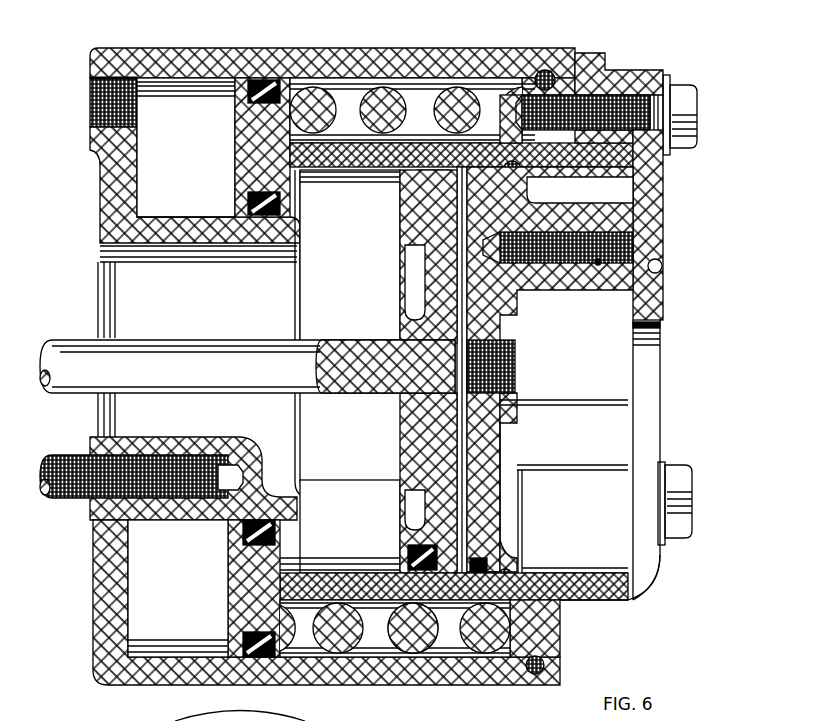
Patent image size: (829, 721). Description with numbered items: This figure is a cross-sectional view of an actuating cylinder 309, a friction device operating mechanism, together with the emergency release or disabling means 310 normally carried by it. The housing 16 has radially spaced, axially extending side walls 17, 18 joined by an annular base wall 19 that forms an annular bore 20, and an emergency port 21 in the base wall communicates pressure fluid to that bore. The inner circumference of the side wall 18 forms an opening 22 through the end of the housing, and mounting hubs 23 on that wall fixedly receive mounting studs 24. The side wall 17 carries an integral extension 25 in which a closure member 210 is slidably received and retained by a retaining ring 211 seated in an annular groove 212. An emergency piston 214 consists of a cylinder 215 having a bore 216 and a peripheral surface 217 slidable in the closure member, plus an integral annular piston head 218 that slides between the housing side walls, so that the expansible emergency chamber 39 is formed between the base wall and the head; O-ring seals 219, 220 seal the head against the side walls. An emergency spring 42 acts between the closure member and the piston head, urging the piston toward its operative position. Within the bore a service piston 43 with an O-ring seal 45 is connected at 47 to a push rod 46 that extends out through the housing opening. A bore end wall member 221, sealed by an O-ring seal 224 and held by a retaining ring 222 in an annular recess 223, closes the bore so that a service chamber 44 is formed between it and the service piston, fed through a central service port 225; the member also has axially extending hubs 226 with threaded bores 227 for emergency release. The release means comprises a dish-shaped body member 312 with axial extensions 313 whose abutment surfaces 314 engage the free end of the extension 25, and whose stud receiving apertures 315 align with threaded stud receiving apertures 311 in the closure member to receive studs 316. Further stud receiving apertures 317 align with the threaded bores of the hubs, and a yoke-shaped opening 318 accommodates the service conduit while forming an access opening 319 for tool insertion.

The actuating cylinder 309 is at (86, 47).
The housing 16 is at (332, 55).
The side wall 17 is at (205, 62).
The emergency port 21 is at (103, 116).
The annular base wall 19 is at (110, 188).
The expansible emergency chamber 39 is at (194, 144).
The annular bore 20 is at (173, 216).
The O-ring seal 45 is at (420, 185).
The side wall 18 is at (212, 242).
The opening 22 is at (155, 245).
The emergency piston 214 is at (362, 235).
The bore 216 is at (340, 571).
The side wall extension 25 is at (403, 62).
The threaded stud receiving apertures 311 is at (461, 161).
The abutment surfaces 314 is at (548, 68).
The axial extensions 313 is at (612, 84).
The stud receiving apertures 315 is at (652, 104).
The emergency release means 310 is at (680, 80).
The studs 316 is at (699, 133).
The body member 312 is at (656, 182).
The stud receiving apertures 317 is at (662, 264).
The yoke-shaped opening 318 is at (661, 331).
The access opening 319 is at (730, 372).
The service chamber 44 is at (462, 458).
The service port 225 is at (507, 392).
The push rod connection 47 is at (418, 392).
The service piston 43 is at (410, 288).
The hubs 226 is at (548, 268).
The threaded bore 227 is at (598, 265).
The bore end wall member 221 is at (483, 500).
The O-ring seal 224 is at (503, 535).
The retaining ring 222 is at (493, 568).
The annular recess 223 is at (500, 586).
The cylinder 215 is at (362, 585).
The push rod 46 is at (219, 370).
The mounting hubs 23 is at (148, 437).
The mounting studs 24 is at (58, 455).
The annular groove 212 is at (513, 673).
The closure member 210 is at (545, 633).
The retaining ring 211 is at (548, 660).
The peripheral surface 217 is at (600, 601).
The annular piston head 218 is at (240, 587).
The O-ring seal 220 is at (245, 535).
The O-ring seal 219 is at (240, 645).
The emergency spring 42 is at (422, 639).